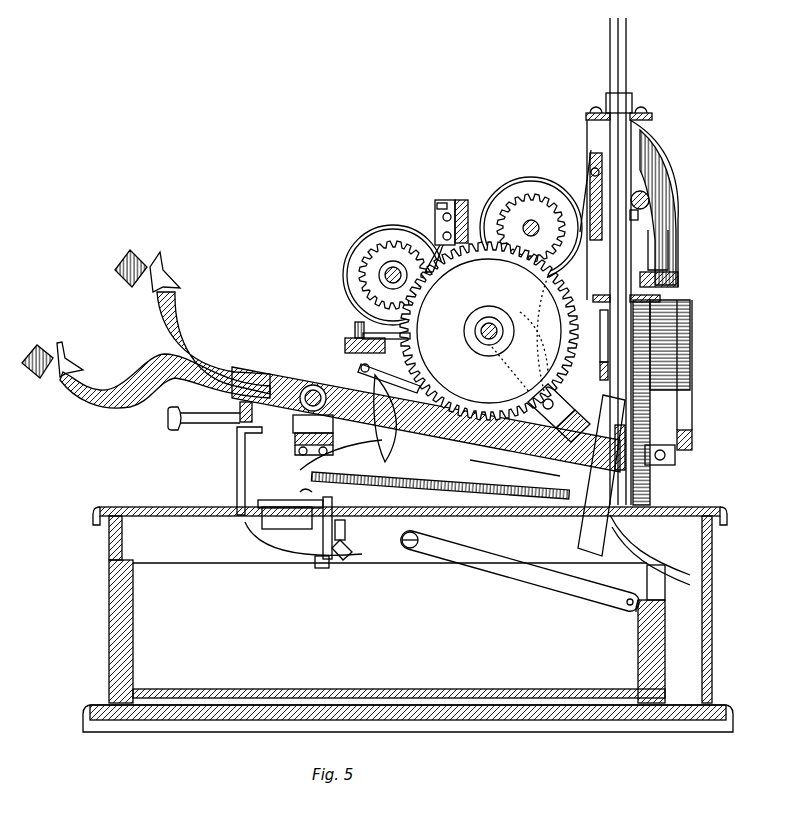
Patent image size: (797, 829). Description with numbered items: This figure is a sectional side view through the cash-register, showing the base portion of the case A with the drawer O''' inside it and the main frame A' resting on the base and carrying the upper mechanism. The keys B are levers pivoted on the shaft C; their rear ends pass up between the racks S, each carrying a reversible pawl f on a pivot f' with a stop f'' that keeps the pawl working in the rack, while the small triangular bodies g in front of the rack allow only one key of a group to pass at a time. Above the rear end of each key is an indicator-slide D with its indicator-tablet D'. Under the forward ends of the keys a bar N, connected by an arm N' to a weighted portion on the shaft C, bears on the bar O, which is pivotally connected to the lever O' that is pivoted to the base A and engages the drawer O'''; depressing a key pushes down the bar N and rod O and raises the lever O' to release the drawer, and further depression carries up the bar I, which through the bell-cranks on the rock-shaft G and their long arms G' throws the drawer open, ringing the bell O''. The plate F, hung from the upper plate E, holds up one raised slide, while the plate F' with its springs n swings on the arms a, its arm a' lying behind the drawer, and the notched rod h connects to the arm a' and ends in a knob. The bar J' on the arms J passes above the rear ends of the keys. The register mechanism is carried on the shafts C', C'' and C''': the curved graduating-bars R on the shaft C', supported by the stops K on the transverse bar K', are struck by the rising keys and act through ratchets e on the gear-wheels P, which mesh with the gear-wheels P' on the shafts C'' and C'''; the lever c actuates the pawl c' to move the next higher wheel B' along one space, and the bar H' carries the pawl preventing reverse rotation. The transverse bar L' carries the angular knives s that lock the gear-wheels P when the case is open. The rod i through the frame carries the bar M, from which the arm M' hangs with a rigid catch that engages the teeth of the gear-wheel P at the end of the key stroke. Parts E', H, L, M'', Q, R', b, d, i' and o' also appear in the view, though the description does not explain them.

The base portion of the case A is at (408, 608).
The main frame A' is at (426, 406).
The keys B is at (240, 341).
The next higher wheel B' is at (601, 475).
The shaft C is at (319, 391).
The shaft C' is at (481, 331).
The shaft C'' is at (380, 275).
The shaft C''' is at (531, 222).
The indicator-slide D is at (632, 210).
The indicator-tablet D' is at (630, 261).
The upper plate E is at (619, 103).
The lower cross plate E' is at (615, 301).
The plate F is at (661, 207).
The plate F' is at (668, 275).
The shaft G is at (661, 189).
The arm of bell-crank G' is at (657, 405).
The pawl H is at (658, 161).
The bar H' is at (447, 225).
The bar I is at (600, 376).
The upwardly-extending arms J is at (689, 365).
The bar J' is at (693, 440).
The stops K is at (515, 465).
The transverse bar K' is at (557, 413).
The block L is at (345, 340).
The transverse bar L' is at (346, 326).
The bar M is at (364, 398).
The arm M' is at (389, 378).
The cam M'' is at (376, 418).
The bar N is at (235, 411).
The arm N' is at (283, 372).
The bar O is at (249, 471).
The lever O' is at (520, 571).
The bell O'' is at (296, 528).
The drawer O''' is at (500, 637).
The gear-wheels P is at (489, 331).
The gear-wheels P' is at (463, 197).
The guide block Q is at (295, 440).
The graduating-bars R is at (566, 399).
The arm R' is at (505, 387).
The racks S is at (652, 408).
The upwardly-extending arms a is at (670, 159).
The downwardly-extending arm a' is at (590, 423).
The rack bar b is at (437, 480).
The lever c is at (505, 212).
The pawl c' is at (503, 195).
The disk d is at (458, 277).
The ratchets e is at (604, 365).
The pawl f is at (678, 473).
The pivot f' is at (660, 448).
The stop f'' is at (689, 459).
The triangular-shaped bodies g is at (615, 432).
The rod h is at (206, 425).
The pin or rod i is at (356, 382).
The pin i' is at (597, 328).
The springs n is at (660, 258).
The pin o' is at (329, 365).
The angular knives s is at (410, 336).